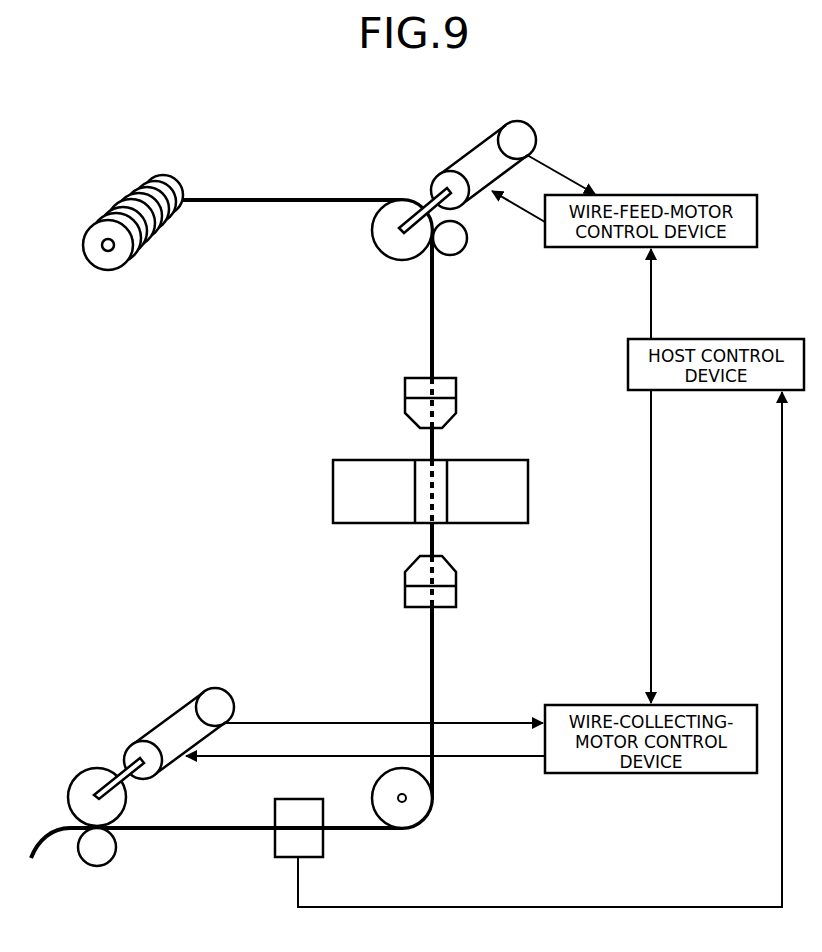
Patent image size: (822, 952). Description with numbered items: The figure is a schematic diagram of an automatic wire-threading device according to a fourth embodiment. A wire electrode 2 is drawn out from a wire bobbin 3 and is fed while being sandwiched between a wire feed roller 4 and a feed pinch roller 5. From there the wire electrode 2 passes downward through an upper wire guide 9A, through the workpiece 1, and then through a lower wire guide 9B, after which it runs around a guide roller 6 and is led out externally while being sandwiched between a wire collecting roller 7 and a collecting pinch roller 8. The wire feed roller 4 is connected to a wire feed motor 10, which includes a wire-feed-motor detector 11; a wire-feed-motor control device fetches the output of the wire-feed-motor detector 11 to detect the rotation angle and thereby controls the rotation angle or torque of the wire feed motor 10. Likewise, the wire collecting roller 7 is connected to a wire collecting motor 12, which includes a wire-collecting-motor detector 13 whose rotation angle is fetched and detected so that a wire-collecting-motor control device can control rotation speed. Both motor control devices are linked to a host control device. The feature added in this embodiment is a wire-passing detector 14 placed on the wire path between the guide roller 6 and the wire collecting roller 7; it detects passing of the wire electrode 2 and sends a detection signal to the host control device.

The workpiece 1 is at (333, 489).
The wire electrode 2 is at (180, 832).
The wire bobbin 3 is at (100, 262).
The wire feed roller 4 is at (392, 249).
The feed pinch roller 5 is at (463, 252).
The guide roller 6 is at (414, 812).
The wire collecting roller 7 is at (88, 782).
The collecting pinch roller 8 is at (112, 859).
The upper wire guide 9A is at (405, 389).
The lower wire guide 9B is at (405, 578).
The wire feed motor 10 is at (467, 153).
The wire-feed-motor detector 11 is at (513, 128).
The wire collecting motor 12 is at (164, 722).
The wire-collecting-motor detector 13 is at (208, 695).
The wire-passing detector 14 is at (278, 850).